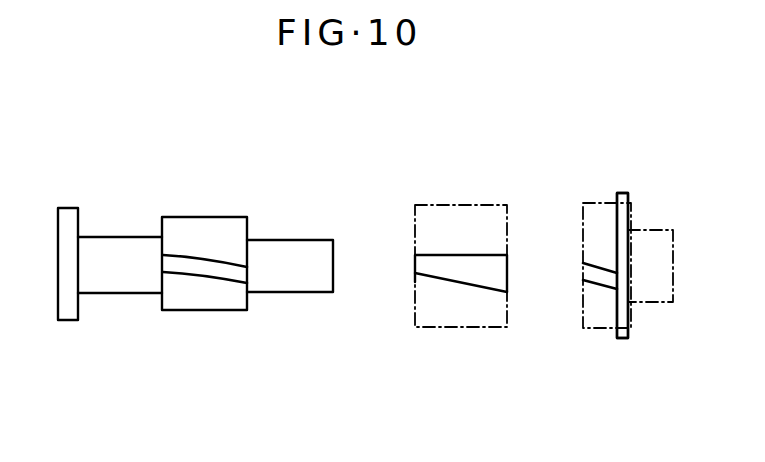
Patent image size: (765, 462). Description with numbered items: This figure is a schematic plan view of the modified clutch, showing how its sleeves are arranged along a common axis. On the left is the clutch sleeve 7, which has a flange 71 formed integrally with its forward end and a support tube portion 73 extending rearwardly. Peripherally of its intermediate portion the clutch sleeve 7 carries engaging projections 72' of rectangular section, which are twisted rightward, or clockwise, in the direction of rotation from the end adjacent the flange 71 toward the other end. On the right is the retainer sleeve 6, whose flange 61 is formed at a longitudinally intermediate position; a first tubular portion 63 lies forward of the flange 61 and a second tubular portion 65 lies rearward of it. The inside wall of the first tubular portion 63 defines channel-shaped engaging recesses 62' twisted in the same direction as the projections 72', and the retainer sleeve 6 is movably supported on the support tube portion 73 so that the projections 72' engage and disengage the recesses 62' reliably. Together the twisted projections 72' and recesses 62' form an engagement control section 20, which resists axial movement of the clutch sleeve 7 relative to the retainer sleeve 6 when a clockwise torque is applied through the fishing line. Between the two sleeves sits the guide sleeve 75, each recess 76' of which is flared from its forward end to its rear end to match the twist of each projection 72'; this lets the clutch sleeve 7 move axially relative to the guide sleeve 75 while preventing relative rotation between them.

The clutch sleeve 7 is at (109, 236).
The flange 71 is at (70, 321).
The support tube portion 73 is at (283, 250).
The engaging projections 72' is at (267, 330).
The engaging recesses 62' is at (515, 334).
The engagement control section 20 is at (455, 403).
The guide sleeve 75 is at (443, 205).
The recess 76' is at (490, 232).
The first tubular portion 63 is at (594, 205).
The retainer sleeve 6 is at (623, 194).
The second tubular portion 65 is at (656, 235).
The flange 61 is at (624, 318).